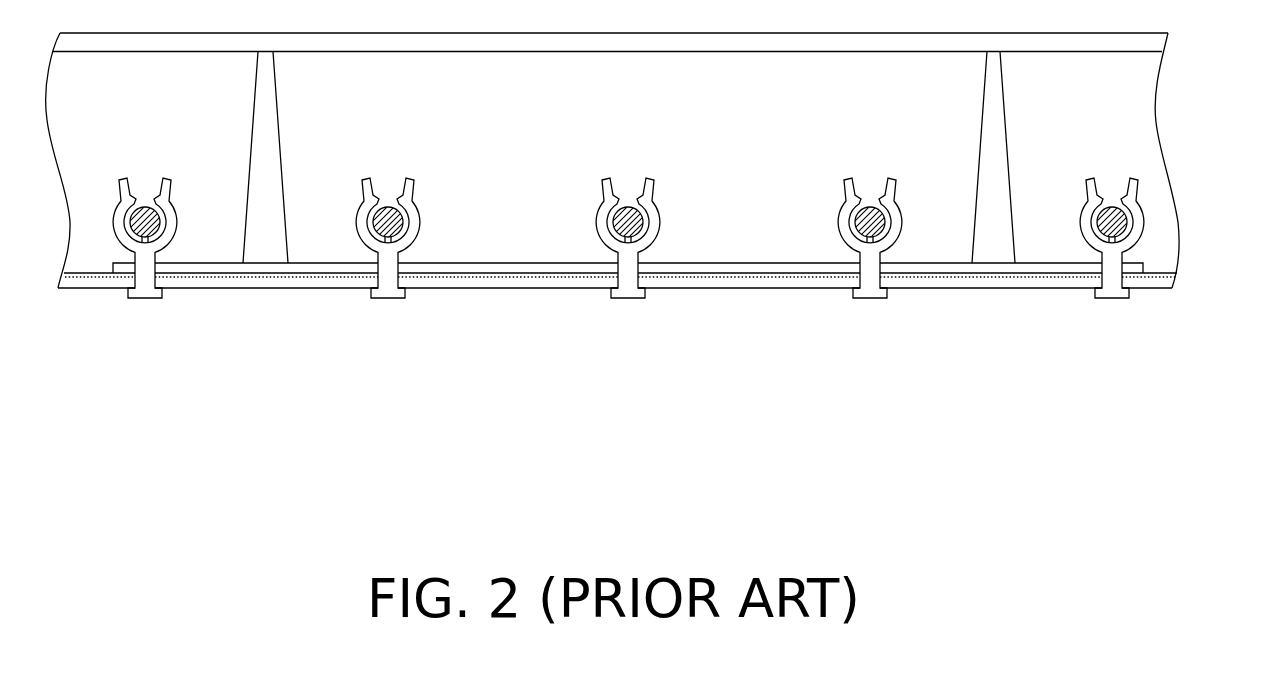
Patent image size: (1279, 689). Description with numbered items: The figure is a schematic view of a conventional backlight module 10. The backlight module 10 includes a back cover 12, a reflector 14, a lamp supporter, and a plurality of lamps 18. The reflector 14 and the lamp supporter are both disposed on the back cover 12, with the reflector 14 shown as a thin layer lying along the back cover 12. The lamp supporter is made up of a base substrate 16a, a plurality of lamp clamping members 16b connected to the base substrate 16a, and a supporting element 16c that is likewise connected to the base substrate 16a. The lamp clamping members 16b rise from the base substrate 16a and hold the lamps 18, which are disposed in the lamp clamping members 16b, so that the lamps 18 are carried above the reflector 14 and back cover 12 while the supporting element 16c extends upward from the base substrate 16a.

The backlight module 10 is at (1268, 390).
The back cover 12 is at (992, 283).
The reflector 14 is at (750, 275).
The base substrate 16a is at (812, 268).
The lamp clamping members 16b is at (598, 235).
The supporting element 16c is at (262, 200).
The lamps 18 is at (882, 233).